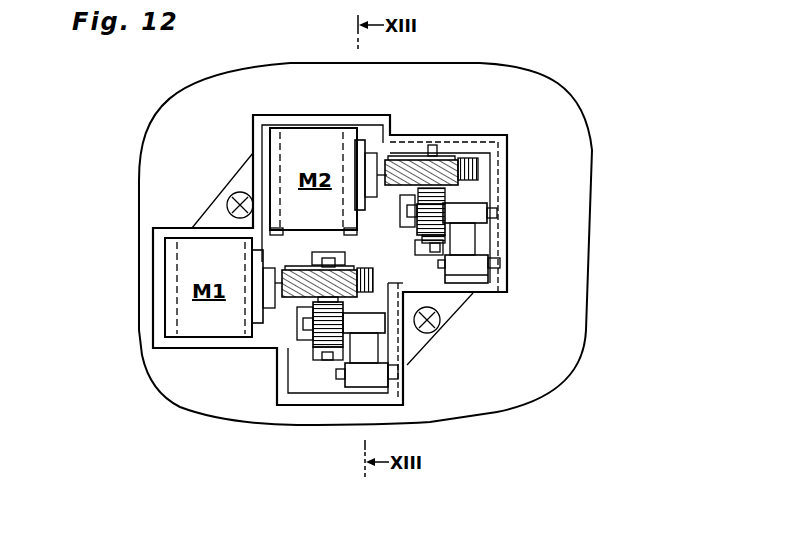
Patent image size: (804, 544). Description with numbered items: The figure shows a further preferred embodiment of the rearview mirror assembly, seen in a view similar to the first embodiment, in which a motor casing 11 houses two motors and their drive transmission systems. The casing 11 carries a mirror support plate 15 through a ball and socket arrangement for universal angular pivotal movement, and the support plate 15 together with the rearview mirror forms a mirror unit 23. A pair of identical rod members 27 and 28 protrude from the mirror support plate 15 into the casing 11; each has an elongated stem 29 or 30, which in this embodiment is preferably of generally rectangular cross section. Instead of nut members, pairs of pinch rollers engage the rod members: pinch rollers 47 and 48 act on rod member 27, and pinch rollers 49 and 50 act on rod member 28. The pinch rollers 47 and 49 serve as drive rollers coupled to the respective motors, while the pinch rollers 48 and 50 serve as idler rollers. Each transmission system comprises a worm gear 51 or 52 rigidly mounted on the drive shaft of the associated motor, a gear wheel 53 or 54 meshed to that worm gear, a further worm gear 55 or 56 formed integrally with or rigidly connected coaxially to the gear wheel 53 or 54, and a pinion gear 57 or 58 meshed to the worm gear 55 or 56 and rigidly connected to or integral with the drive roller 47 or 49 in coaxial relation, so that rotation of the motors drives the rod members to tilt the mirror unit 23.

The motor casing 11 is at (505, 296).
The mirror support plate 15 is at (517, 400).
The mirror unit 23 is at (550, 378).
The rod member 27 is at (358, 380).
The rod member 28 is at (465, 243).
The stem 29 is at (368, 355).
The stem 30 is at (472, 232).
The pinch roller 47 is at (378, 326).
The pinch roller 48 is at (383, 388).
The pinch roller 49 is at (470, 208).
The pinch roller 50 is at (472, 268).
The worm gear 51 is at (281, 297).
The worm gear 52 is at (392, 158).
The gear wheel 53 is at (368, 285).
The gear wheel 54 is at (462, 152).
The worm gear 55 is at (311, 338).
The worm gear 56 is at (446, 231).
The pinion gear 57 is at (334, 335).
The pinion gear 58 is at (447, 198).